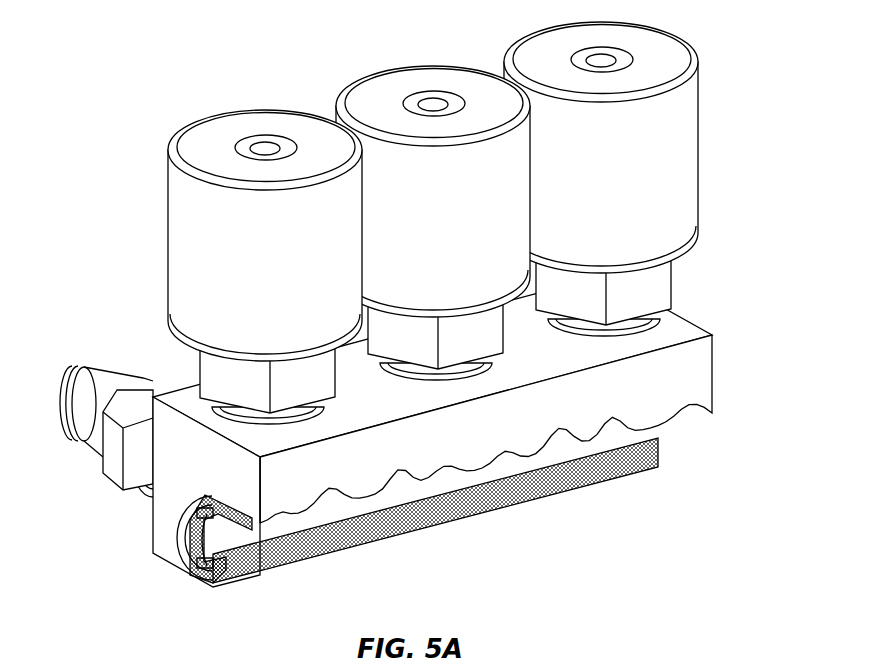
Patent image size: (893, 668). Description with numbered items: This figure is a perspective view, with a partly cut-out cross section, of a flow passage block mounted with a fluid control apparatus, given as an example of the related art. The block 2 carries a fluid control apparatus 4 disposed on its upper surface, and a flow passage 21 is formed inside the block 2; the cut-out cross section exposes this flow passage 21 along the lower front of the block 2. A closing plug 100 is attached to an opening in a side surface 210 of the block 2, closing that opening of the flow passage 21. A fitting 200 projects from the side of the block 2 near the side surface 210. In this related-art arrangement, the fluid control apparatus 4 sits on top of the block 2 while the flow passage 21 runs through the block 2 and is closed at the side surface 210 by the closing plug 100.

The fluid control apparatus 4 is at (200, 240).
The pipe fitting 200 is at (186, 397).
The side surface 210 is at (140, 490).
The closing plug 100 is at (160, 565).
The flow passage 21 is at (287, 565).
The block 2 is at (439, 450).